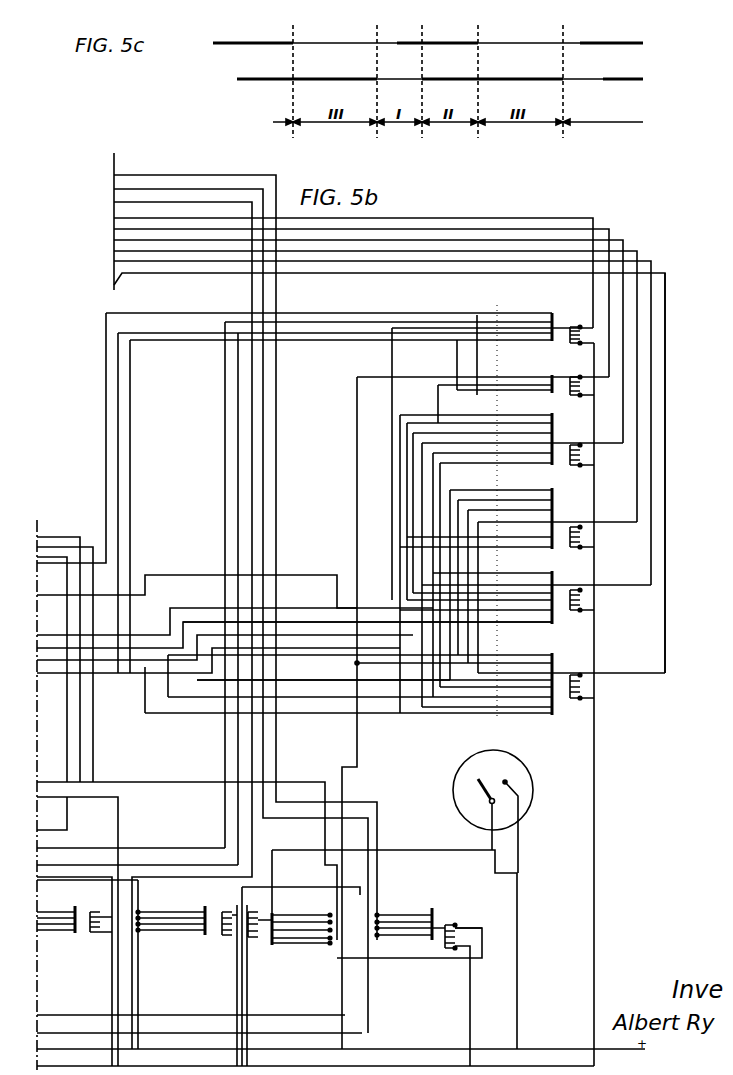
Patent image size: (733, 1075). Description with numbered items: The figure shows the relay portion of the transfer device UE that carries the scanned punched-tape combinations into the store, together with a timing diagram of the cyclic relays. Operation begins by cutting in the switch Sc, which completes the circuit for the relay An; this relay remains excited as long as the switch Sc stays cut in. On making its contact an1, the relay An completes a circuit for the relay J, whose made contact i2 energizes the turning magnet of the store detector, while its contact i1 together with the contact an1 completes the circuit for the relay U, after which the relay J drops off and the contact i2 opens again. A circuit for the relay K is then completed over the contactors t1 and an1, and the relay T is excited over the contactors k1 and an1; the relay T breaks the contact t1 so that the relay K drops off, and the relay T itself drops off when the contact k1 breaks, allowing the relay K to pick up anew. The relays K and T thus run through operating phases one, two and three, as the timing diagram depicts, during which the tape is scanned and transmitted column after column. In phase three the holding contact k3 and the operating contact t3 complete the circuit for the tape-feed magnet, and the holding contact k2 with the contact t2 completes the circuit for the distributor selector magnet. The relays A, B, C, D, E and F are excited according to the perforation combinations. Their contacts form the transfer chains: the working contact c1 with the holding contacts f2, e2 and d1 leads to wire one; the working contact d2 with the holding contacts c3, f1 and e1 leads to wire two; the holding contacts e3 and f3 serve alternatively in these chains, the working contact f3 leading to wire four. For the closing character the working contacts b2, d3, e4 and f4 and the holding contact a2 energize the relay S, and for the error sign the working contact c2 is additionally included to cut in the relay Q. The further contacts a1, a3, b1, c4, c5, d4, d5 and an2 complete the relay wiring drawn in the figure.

In FIG. 5C, the relay K is at (213, 43).
In FIG. 5B, the relay K is at (254, 937).
In FIG. 5C, the relay T is at (237, 79).
In FIG. 5B, the relay T is at (458, 937).
In FIG. 5B, the relay A is at (582, 336).
In FIG. 5B, the relay B is at (582, 387).
In FIG. 5B, the relay C is at (582, 460).
In FIG. 5B, the relay D is at (582, 540).
In FIG. 5B, the relay E is at (582, 600).
In FIG. 5B, the relay F is at (582, 688).
In FIG. 5B, the contact a1 is at (548, 340).
In FIG. 5B, the holding contact a2 is at (560, 326).
In FIG. 5B, the contact a3 is at (549, 313).
In FIG. 5B, the contact b1 is at (552, 392).
In FIG. 5B, the working contact b2 is at (556, 377).
In FIG. 5B, the working contact c1 is at (549, 455).
In FIG. 5B, the working contact c2 is at (556, 463).
In FIG. 5B, the holding contact c3 is at (592, 443).
In FIG. 5B, the contact c4 is at (556, 424).
In FIG. 5B, the contact c5 is at (556, 415).
In FIG. 5B, the holding contact d1 is at (550, 540).
In FIG. 5B, the working contact d2 is at (556, 547).
In FIG. 5B, the working contact d3 is at (590, 522).
In FIG. 5B, the contact d4 is at (556, 500).
In FIG. 5B, the contact d5 is at (545, 490).
In FIG. 5B, the holding contact e1 is at (554, 620).
In FIG. 5B, the holding contact e2 is at (557, 610).
In FIG. 5B, the holding contact e3 is at (590, 582).
In FIG. 5B, the working contact e4 is at (558, 576).
In FIG. 5B, the holding contact f1 is at (552, 713).
In FIG. 5B, the holding contact f2 is at (557, 707).
In FIG. 5B, the working contact f3 is at (560, 673).
In FIG. 5B, the working contact f4 is at (549, 655).
In FIG. 5B, the transfer device UE is at (708, 434).
In FIG. 5B, the switch Sc is at (493, 811).
In FIG. 5B, the relay J is at (95, 933).
In FIG. 5B, the contact i1 is at (70, 930).
In FIG. 5B, the contact i2 is at (64, 912).
In FIG. 5B, the relay An is at (222, 935).
In FIG. 5B, the contact an1 is at (200, 912).
In FIG. 5B, the contact an2 is at (200, 931).
In FIG. 5B, the contact k1 is at (282, 943).
In FIG. 5B, the holding contact k2 is at (288, 922).
In FIG. 5B, the holding contact k3 is at (288, 915).
In FIG. 5B, the contact t1 is at (428, 935).
In FIG. 5B, the contact t2 is at (436, 922).
In FIG. 5B, the operating contact t3 is at (434, 915).